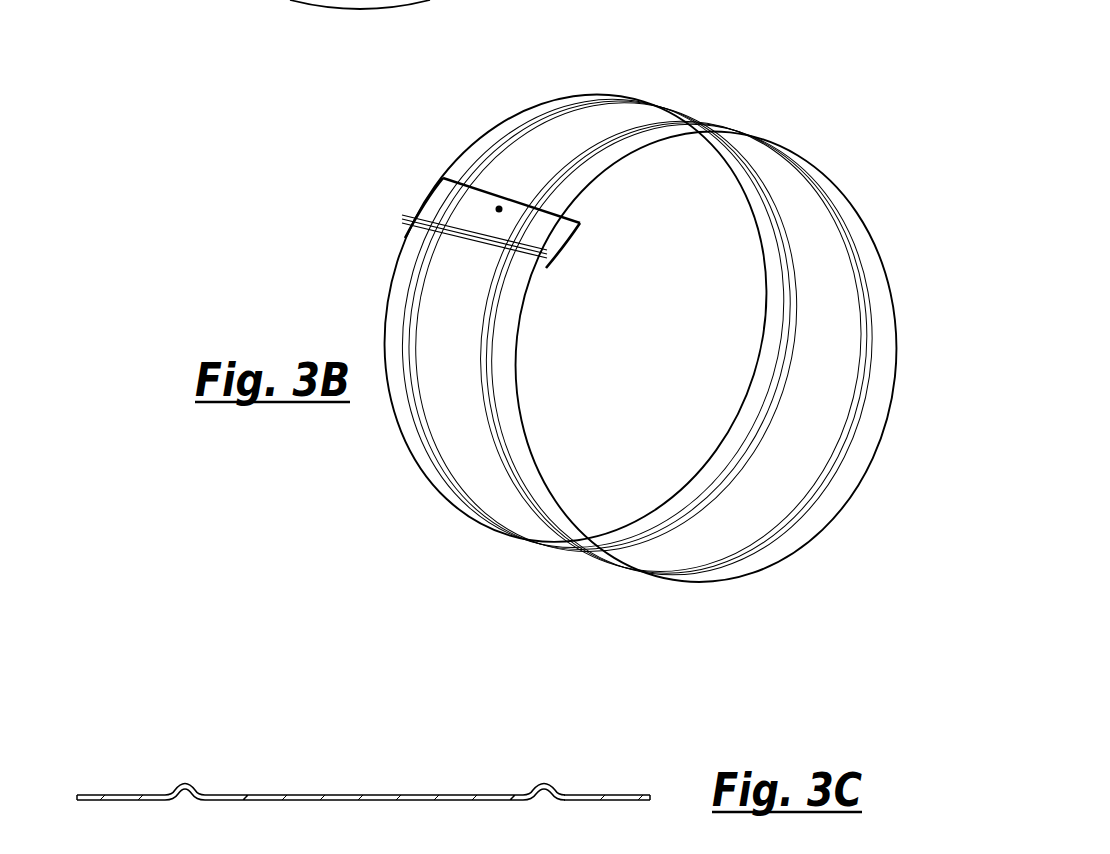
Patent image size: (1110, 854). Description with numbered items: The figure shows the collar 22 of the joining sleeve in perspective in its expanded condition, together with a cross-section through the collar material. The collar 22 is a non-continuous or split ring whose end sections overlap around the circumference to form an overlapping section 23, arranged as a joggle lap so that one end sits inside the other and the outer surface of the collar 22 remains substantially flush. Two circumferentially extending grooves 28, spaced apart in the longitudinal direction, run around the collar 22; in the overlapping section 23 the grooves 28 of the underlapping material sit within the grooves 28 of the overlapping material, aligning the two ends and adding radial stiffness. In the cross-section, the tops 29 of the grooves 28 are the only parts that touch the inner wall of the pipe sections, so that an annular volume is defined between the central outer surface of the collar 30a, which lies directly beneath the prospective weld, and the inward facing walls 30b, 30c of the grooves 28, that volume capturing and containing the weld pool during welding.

In FIG. 3B, the collar 22 is at (809, 121).
In FIG. 3C, the collar 22 is at (134, 711).
In FIG. 3B, the overlapping section 23 is at (418, 193).
In FIG. 3B, the grooves 28 is at (732, 128).
In FIG. 3C, the grooves 28 is at (184, 784).
In FIG. 3C, the tops of the grooves 29 is at (180, 788).
In FIG. 3C, the central outer surface of the collar 30a is at (339, 791).
In FIG. 3C, the inward facing wall of the groove 30b is at (520, 787).
In FIG. 3C, the inward facing wall of the groove 30c is at (205, 787).